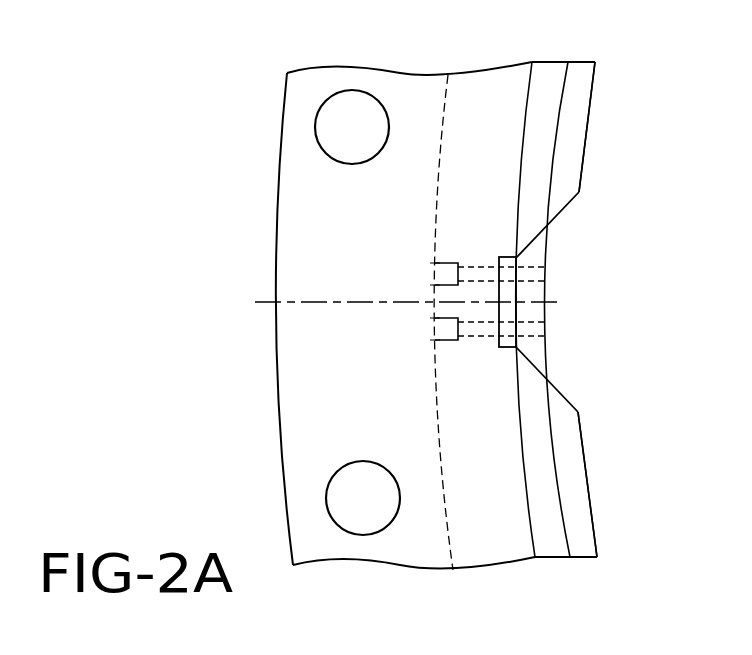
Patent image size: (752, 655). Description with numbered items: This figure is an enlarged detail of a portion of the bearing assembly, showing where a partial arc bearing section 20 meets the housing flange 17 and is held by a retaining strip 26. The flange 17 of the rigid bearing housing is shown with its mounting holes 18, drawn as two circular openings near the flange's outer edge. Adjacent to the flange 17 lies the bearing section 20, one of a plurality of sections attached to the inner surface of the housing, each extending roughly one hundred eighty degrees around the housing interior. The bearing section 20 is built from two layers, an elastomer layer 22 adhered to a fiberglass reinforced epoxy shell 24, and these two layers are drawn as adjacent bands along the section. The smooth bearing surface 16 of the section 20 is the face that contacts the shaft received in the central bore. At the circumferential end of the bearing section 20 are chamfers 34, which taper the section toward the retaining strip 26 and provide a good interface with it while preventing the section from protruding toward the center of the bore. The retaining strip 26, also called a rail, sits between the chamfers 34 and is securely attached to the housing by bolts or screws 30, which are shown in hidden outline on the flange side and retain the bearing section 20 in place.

The bearing surface 16 is at (592, 508).
The flange 17 is at (298, 418).
The mounting holes 18 is at (348, 128).
The partial arc bearing section 20 is at (523, 52).
The elastomer layer 22 is at (576, 138).
The fiberglass reinforced epoxy shell 24 is at (537, 159).
The retaining strip 26 is at (540, 313).
The bolts or screws 30 is at (432, 278).
The chamfer 34 is at (567, 206).